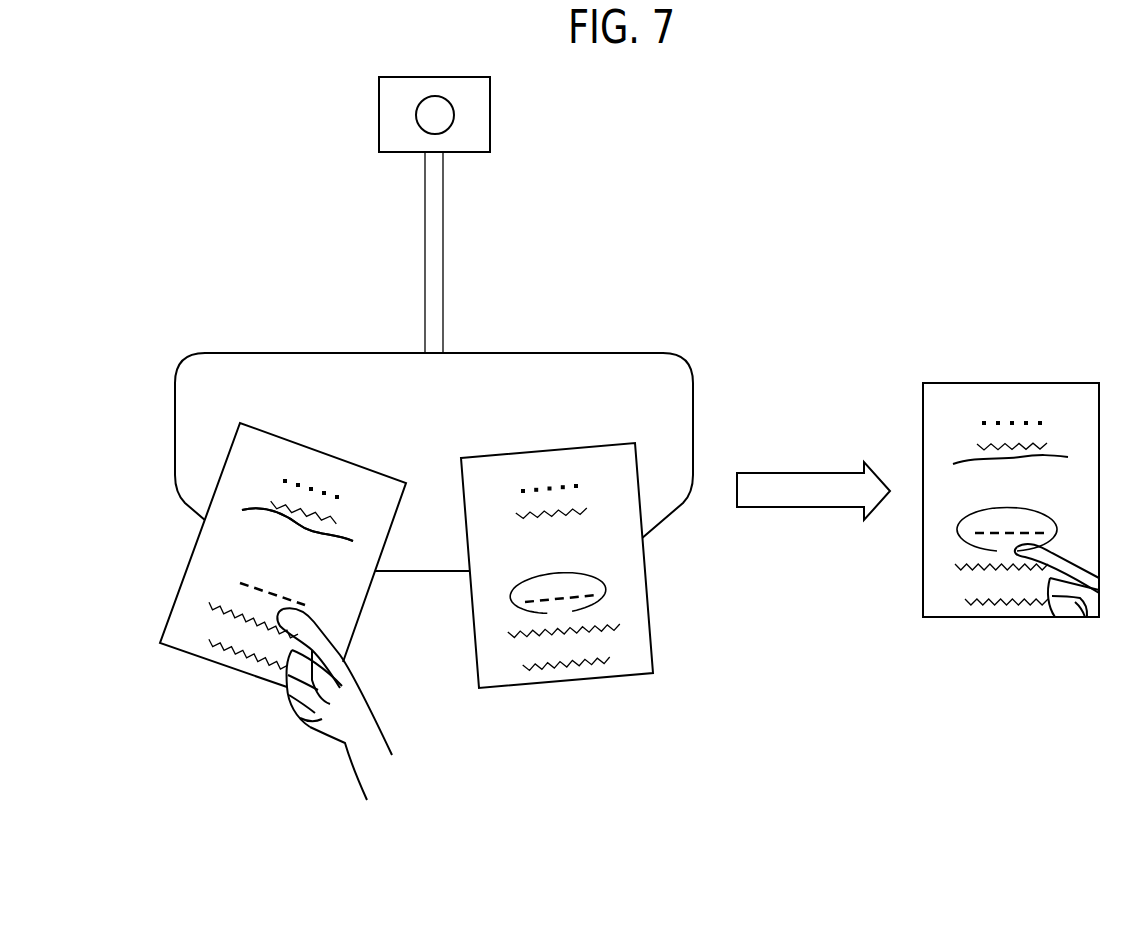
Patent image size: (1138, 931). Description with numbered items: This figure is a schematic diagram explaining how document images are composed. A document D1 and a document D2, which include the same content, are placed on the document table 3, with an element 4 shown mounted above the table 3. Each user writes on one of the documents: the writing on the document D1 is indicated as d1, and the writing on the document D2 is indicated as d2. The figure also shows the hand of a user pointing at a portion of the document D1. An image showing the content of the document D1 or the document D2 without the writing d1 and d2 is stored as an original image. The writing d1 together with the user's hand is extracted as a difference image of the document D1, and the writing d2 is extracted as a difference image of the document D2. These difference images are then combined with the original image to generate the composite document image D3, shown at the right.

The document table 3 is at (606, 353).
The camera 4 is at (490, 115).
The document D1 is at (185, 576).
The document D2 is at (653, 587).
The composite document image D3 is at (1067, 383).
The writing d1 is at (332, 538).
The writing d2 is at (512, 603).